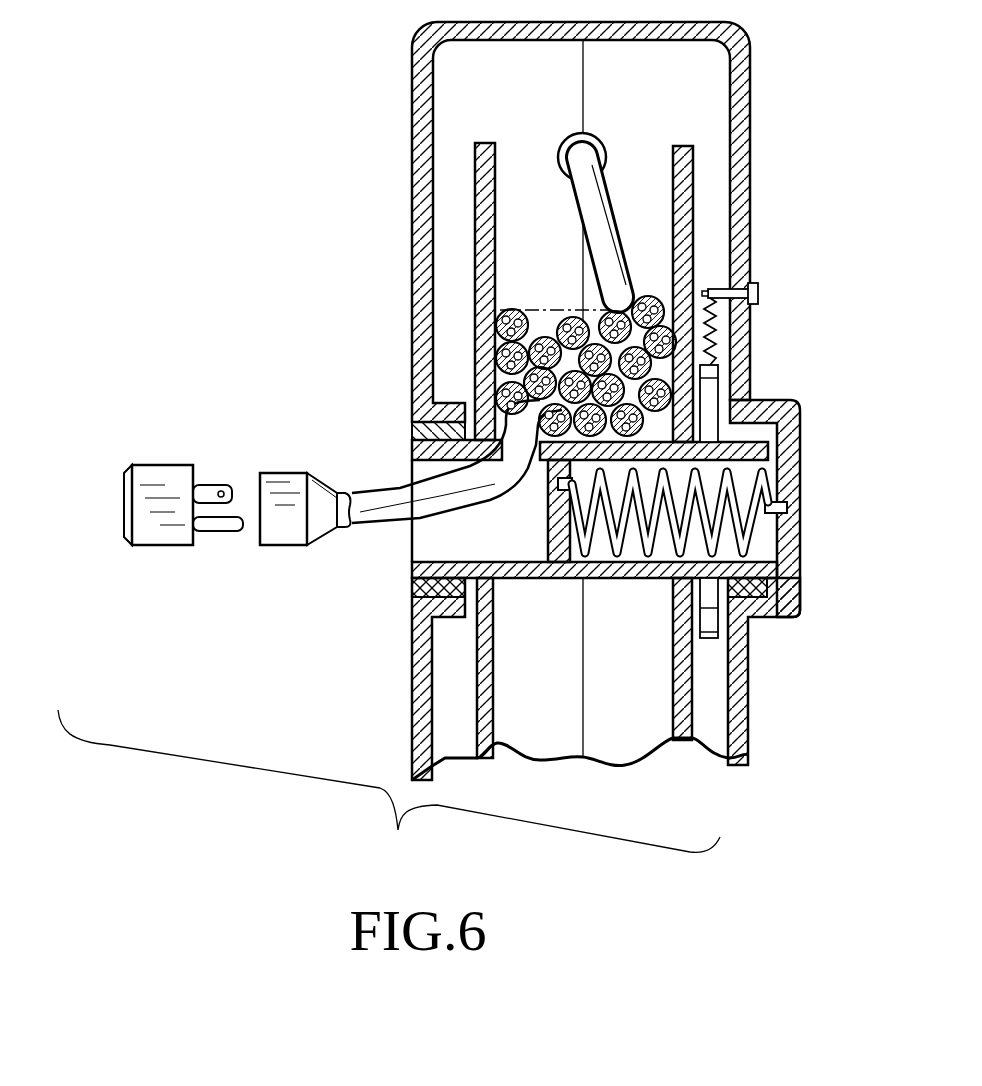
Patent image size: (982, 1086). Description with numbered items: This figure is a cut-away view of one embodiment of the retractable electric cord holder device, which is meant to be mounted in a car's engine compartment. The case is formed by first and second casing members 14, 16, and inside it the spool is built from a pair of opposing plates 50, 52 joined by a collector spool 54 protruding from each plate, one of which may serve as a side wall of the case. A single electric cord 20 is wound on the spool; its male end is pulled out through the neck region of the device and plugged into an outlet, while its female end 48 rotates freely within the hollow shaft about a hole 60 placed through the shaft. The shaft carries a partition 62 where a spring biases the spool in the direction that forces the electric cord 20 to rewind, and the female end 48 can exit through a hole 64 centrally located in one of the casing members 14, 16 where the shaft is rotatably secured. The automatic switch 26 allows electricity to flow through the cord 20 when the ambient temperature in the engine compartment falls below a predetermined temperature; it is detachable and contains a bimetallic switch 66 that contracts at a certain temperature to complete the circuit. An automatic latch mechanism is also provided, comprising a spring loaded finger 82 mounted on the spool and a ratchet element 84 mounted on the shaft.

The first casing member 14 is at (412, 117).
The second casing member 16 is at (750, 108).
The electric cord 20 is at (630, 190).
The automatic switch 26 is at (150, 463).
The female end 48 is at (283, 456).
The opposing plate 50 is at (455, 693).
The opposing plate 52 is at (718, 692).
The collector spool 54 is at (621, 604).
The hole 60 is at (465, 418).
The partition 62 is at (538, 530).
The hole 64 is at (392, 540).
The bimetallic switch 66 is at (167, 475).
The spring loaded finger 82 is at (735, 320).
The ratchet element 84 is at (735, 385).